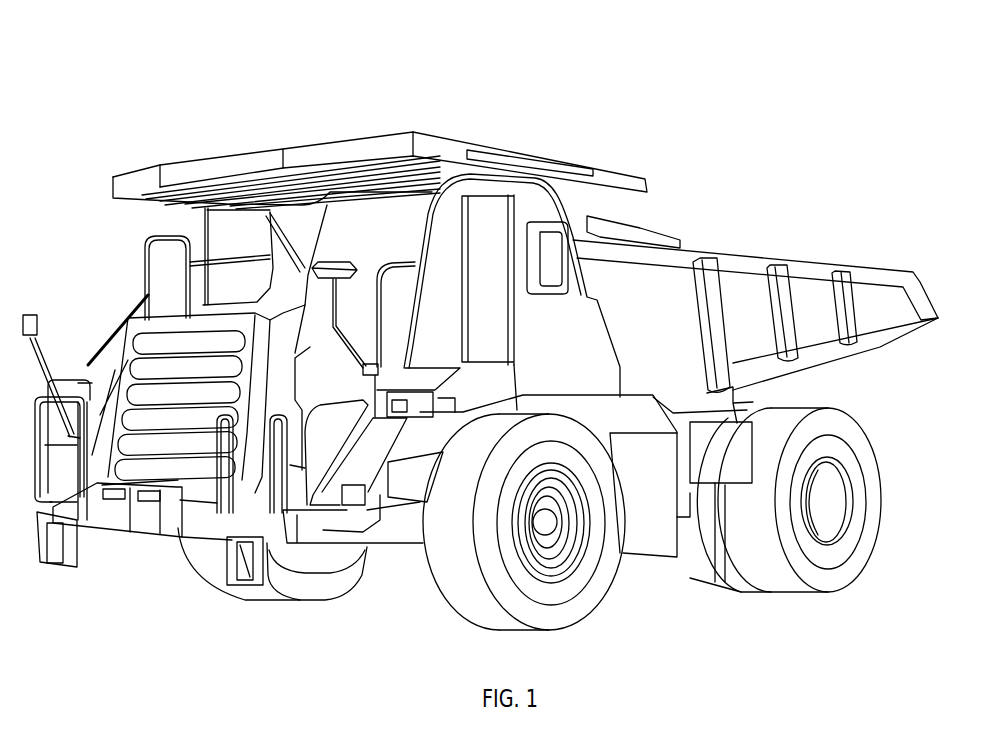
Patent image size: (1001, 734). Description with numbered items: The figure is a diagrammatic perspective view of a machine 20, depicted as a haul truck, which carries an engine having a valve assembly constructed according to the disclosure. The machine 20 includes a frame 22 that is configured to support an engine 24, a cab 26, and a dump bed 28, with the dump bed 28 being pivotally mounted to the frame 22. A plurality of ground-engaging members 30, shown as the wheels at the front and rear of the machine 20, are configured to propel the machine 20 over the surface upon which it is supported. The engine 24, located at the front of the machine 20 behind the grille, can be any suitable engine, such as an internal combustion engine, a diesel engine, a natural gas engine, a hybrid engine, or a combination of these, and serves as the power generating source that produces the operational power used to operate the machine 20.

The machine 20 is at (126, 106).
The frame 22 is at (197, 528).
The engine 24 is at (160, 388).
The cab 26 is at (463, 198).
The dump bed 28 is at (742, 287).
The ground-engaging members 30 is at (288, 590).